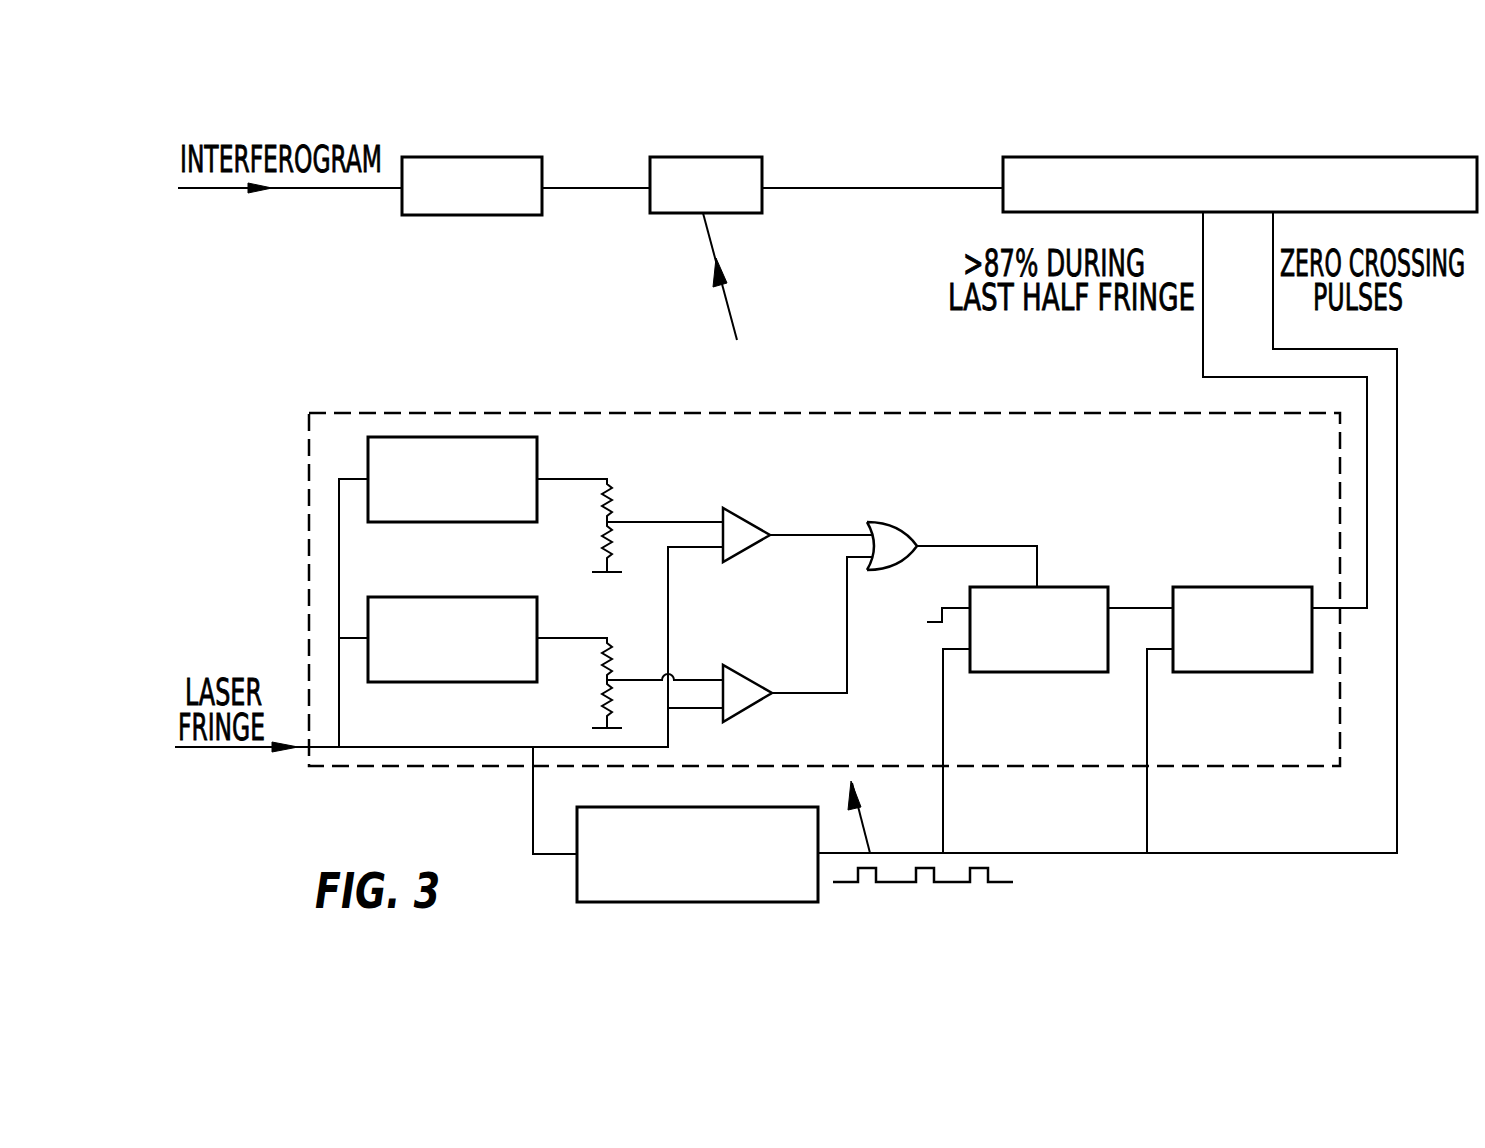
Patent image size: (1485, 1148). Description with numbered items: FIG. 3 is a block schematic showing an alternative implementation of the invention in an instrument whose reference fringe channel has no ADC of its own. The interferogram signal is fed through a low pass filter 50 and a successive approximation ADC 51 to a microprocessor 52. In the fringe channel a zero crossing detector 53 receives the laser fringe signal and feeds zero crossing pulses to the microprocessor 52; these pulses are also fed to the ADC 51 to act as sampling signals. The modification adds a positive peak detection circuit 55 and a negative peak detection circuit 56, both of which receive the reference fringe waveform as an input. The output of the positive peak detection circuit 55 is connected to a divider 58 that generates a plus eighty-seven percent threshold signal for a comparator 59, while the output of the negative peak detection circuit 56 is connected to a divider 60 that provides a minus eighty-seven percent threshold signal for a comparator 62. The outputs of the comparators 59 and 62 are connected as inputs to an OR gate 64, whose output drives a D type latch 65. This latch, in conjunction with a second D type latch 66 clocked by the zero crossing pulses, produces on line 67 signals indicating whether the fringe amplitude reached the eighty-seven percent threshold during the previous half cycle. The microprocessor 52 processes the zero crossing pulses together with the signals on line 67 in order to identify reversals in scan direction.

The low pass filter 50 is at (540, 168).
The successive approximation ADC 51 is at (760, 170).
The microprocessor 52 is at (1003, 176).
The zero crossing detector 53 is at (612, 890).
The positive peak detection circuit 55 is at (522, 458).
The negative peak detection circuit 56 is at (432, 682).
The divider 58 is at (598, 520).
The comparator 59 is at (740, 540).
The divider 60 is at (598, 678).
The comparator 62 is at (738, 690).
The OR gate 64 is at (890, 555).
The D type latch 65 is at (1046, 660).
The D type latch 66 is at (1248, 660).
The line 67 is at (1203, 357).